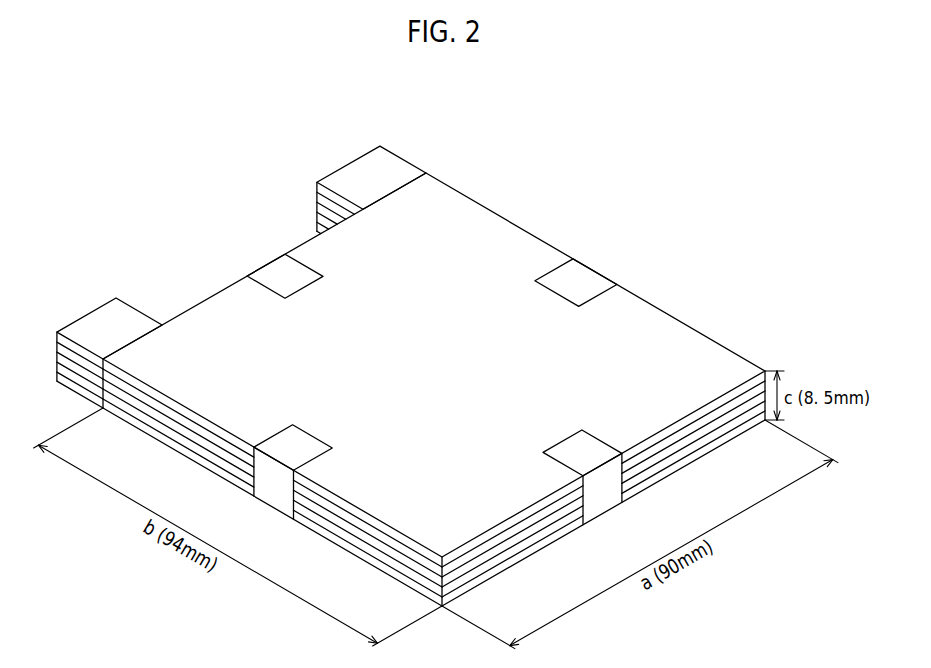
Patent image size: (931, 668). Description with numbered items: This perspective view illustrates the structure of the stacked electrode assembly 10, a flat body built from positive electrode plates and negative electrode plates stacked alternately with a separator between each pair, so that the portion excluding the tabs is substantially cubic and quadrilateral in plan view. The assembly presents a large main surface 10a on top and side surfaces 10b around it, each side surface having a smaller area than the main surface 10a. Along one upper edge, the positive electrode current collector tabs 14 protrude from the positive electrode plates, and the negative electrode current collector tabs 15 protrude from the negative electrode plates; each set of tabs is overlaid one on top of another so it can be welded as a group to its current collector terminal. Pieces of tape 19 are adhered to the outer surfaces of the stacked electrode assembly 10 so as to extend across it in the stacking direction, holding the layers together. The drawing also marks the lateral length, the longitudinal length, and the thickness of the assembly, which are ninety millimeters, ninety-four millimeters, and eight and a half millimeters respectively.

The stacked electrode assembly 10 is at (554, 178).
The main surface 10a is at (435, 222).
The side surfaces 10b is at (348, 534).
The positive electrode current collector tab 14 is at (101, 323).
The negative electrode current collector tabs 15 is at (364, 171).
The tape 19 is at (277, 271).